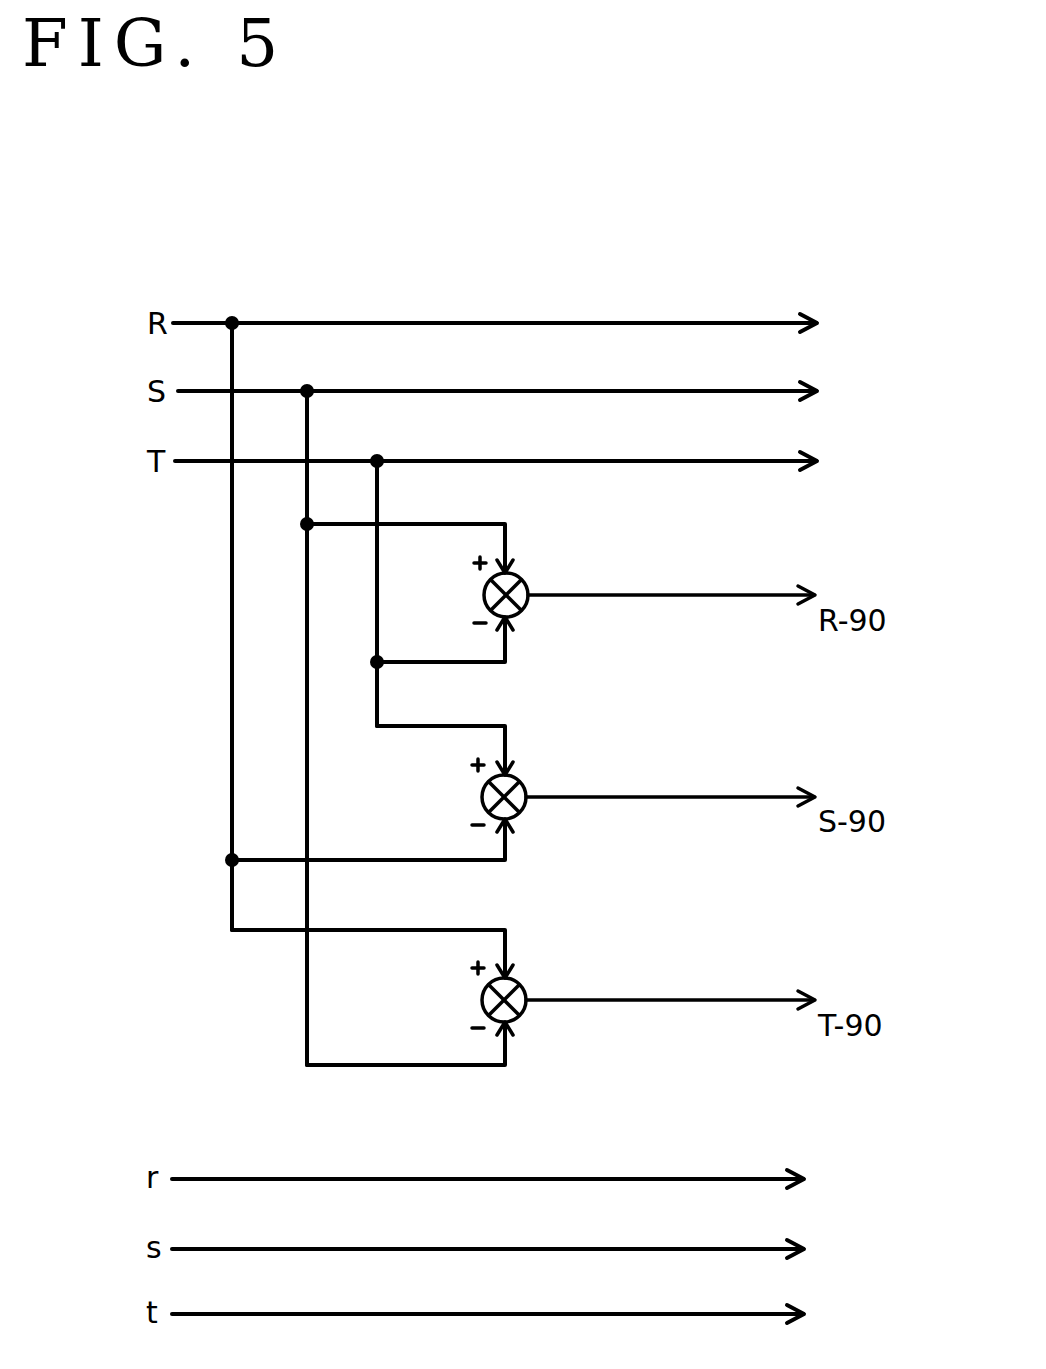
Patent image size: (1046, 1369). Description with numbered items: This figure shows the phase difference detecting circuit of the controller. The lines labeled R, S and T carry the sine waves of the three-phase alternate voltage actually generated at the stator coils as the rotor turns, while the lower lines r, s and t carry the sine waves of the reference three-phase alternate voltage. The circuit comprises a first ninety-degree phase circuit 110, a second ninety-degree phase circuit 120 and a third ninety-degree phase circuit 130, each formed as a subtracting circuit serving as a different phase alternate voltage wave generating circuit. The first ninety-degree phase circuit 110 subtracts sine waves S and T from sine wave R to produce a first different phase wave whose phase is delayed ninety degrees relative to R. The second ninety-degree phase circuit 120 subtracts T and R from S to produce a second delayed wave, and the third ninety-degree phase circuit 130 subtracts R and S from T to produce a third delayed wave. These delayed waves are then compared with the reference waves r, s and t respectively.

The first 90-degree phase circuit 110 is at (526, 604).
The second 90-degree phase circuit 120 is at (524, 806).
The third 90-degree phase circuit 130 is at (524, 1009).